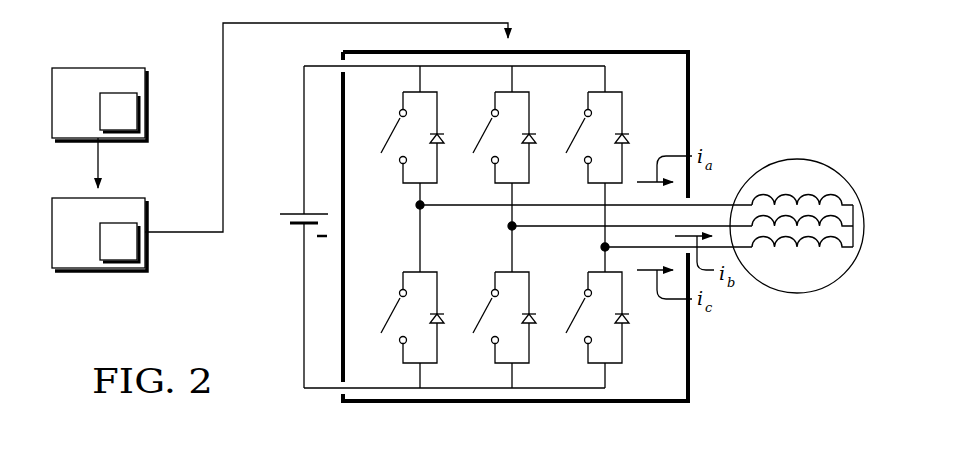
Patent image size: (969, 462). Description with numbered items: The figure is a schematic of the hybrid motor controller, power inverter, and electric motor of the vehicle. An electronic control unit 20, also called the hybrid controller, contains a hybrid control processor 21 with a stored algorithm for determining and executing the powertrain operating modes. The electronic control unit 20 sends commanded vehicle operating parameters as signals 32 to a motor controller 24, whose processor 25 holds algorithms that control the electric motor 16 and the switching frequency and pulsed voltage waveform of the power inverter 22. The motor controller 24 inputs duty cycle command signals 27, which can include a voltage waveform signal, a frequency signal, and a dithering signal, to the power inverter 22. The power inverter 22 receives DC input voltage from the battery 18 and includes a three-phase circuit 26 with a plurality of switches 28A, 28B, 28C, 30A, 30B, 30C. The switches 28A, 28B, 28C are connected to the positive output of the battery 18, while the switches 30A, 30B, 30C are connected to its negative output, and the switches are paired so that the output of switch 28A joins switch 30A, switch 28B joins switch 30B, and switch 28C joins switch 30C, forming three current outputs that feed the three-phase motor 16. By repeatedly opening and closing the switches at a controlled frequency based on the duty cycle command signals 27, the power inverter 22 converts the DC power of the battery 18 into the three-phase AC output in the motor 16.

The electric motor 16 is at (791, 160).
The battery 18 is at (297, 203).
The electronic control unit 20 is at (84, 97).
The hybrid control processor 21 is at (128, 122).
The power inverter 22 is at (690, 98).
The motor controller 24 is at (84, 226).
The processor 25 is at (128, 251).
The three-phase circuit 26 is at (624, 77).
The duty cycle command signals 27 is at (183, 233).
The switch 28A is at (382, 129).
The switch 28B is at (474, 129).
The switch 28C is at (567, 129).
The switch 30A is at (382, 311).
The switch 30B is at (474, 311).
The switch 30C is at (567, 311).
The signals 32 is at (100, 170).